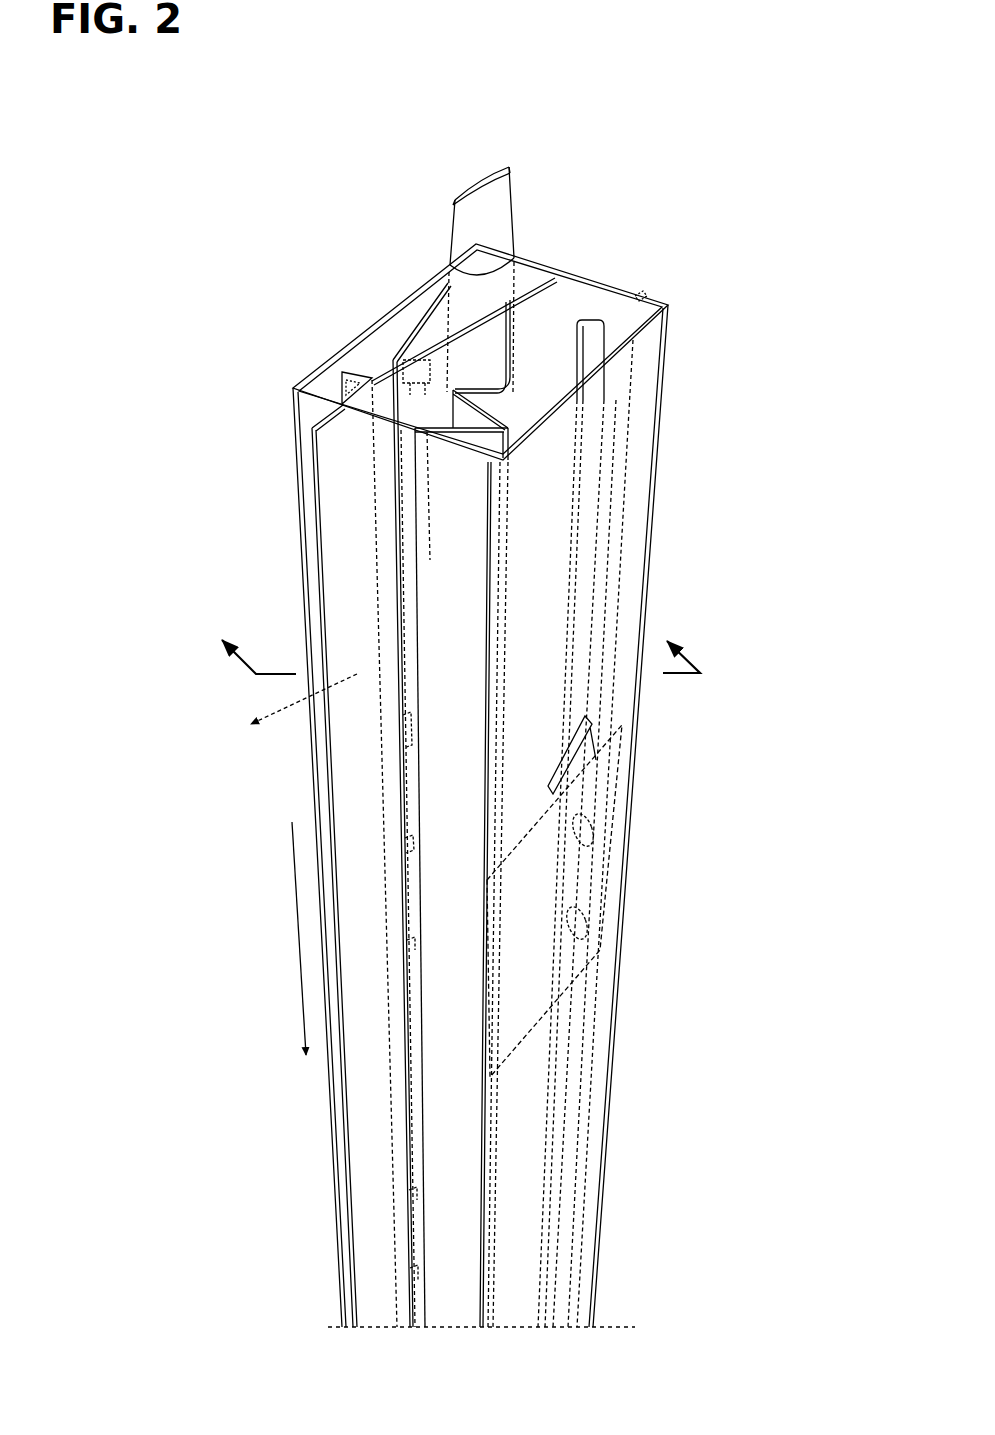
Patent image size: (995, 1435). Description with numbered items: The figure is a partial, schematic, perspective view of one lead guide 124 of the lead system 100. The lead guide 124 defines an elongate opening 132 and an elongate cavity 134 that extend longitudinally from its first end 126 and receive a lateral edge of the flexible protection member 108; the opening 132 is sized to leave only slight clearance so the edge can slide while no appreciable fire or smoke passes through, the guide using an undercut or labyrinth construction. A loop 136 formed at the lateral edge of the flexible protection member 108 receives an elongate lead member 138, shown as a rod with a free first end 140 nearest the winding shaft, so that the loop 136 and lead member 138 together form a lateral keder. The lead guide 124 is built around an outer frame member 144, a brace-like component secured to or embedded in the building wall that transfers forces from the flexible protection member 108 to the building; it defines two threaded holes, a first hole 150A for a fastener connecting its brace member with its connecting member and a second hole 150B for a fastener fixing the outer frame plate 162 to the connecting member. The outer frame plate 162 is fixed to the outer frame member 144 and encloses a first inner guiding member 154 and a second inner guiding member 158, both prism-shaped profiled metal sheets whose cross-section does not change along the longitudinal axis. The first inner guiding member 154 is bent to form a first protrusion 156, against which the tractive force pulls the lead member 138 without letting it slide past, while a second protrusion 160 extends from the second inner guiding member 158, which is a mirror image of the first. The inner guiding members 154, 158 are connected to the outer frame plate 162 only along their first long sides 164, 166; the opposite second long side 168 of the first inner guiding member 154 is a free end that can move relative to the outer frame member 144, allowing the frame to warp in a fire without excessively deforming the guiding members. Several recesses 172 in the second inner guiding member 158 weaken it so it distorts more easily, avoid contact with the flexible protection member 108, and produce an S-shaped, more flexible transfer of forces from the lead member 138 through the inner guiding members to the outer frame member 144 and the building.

The lead system 100 is at (488, 702).
The lead guide 124 is at (292, 157).
The first end 126 is at (323, 347).
The first end 140 is at (468, 170).
The lead member 138 is at (515, 285).
The first protrusion 156 is at (482, 381).
The elongate cavity 134 is at (542, 327).
The loop 136 is at (408, 315).
The second protrusion 160 is at (427, 365).
The second inner guiding member 158 is at (340, 388).
The second long side 168 is at (641, 297).
The first long side 166 is at (340, 443).
The flexible protection member 108 is at (395, 512).
The recesses 172 is at (390, 580).
The first inner guiding member 154 is at (556, 380).
The outer frame plate 162 is at (655, 545).
The first long side 164 is at (452, 518).
The elongate opening 132 is at (382, 716).
The outer frame member 144 is at (613, 880).
The first hole 150A is at (592, 828).
The second hole 150B is at (588, 930).